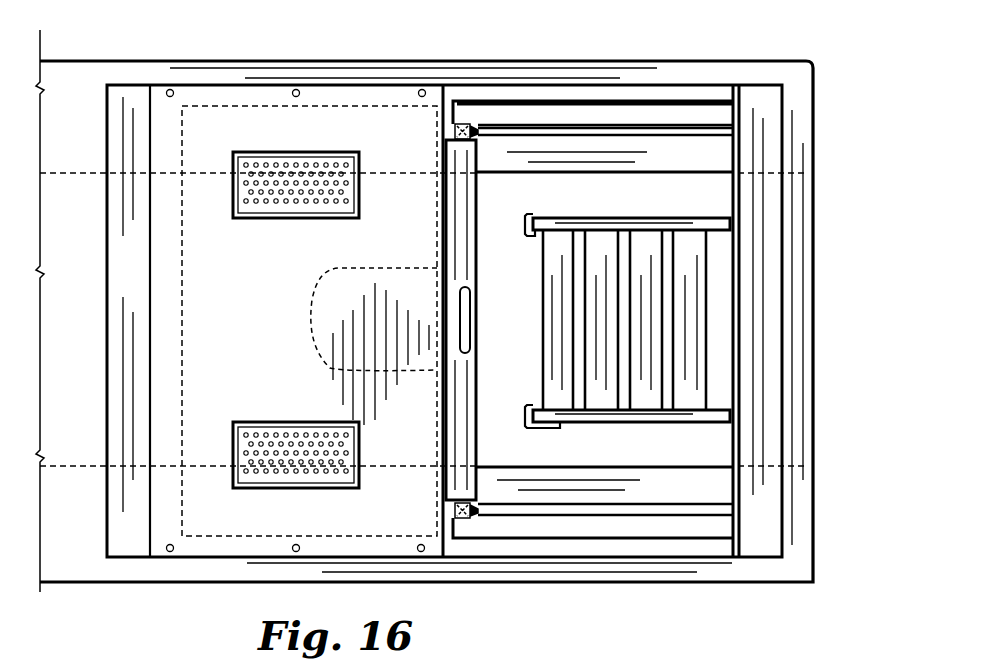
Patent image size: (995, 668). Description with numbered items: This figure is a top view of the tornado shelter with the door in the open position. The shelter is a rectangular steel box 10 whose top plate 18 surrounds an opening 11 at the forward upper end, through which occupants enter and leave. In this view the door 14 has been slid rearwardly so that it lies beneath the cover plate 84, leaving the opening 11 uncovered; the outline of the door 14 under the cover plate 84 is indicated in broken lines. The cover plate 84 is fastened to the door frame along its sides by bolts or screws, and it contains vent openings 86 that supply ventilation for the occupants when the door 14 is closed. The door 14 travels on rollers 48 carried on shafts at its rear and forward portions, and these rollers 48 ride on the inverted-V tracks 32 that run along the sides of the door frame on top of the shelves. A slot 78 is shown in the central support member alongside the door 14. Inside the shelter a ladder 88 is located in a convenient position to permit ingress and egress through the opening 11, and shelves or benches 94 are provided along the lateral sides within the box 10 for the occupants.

The box 10 is at (818, 60).
The opening 11 is at (324, 304).
The door 14 is at (478, 241).
The top plate 18 is at (178, 570).
The tracks 32 is at (645, 130).
The rollers 48 is at (471, 125).
The handle slot 78 is at (466, 343).
The cover plate 84 is at (218, 125).
The vent openings 86 is at (305, 203).
The ladder 88 is at (655, 222).
The shelves or benches 94 is at (688, 170).